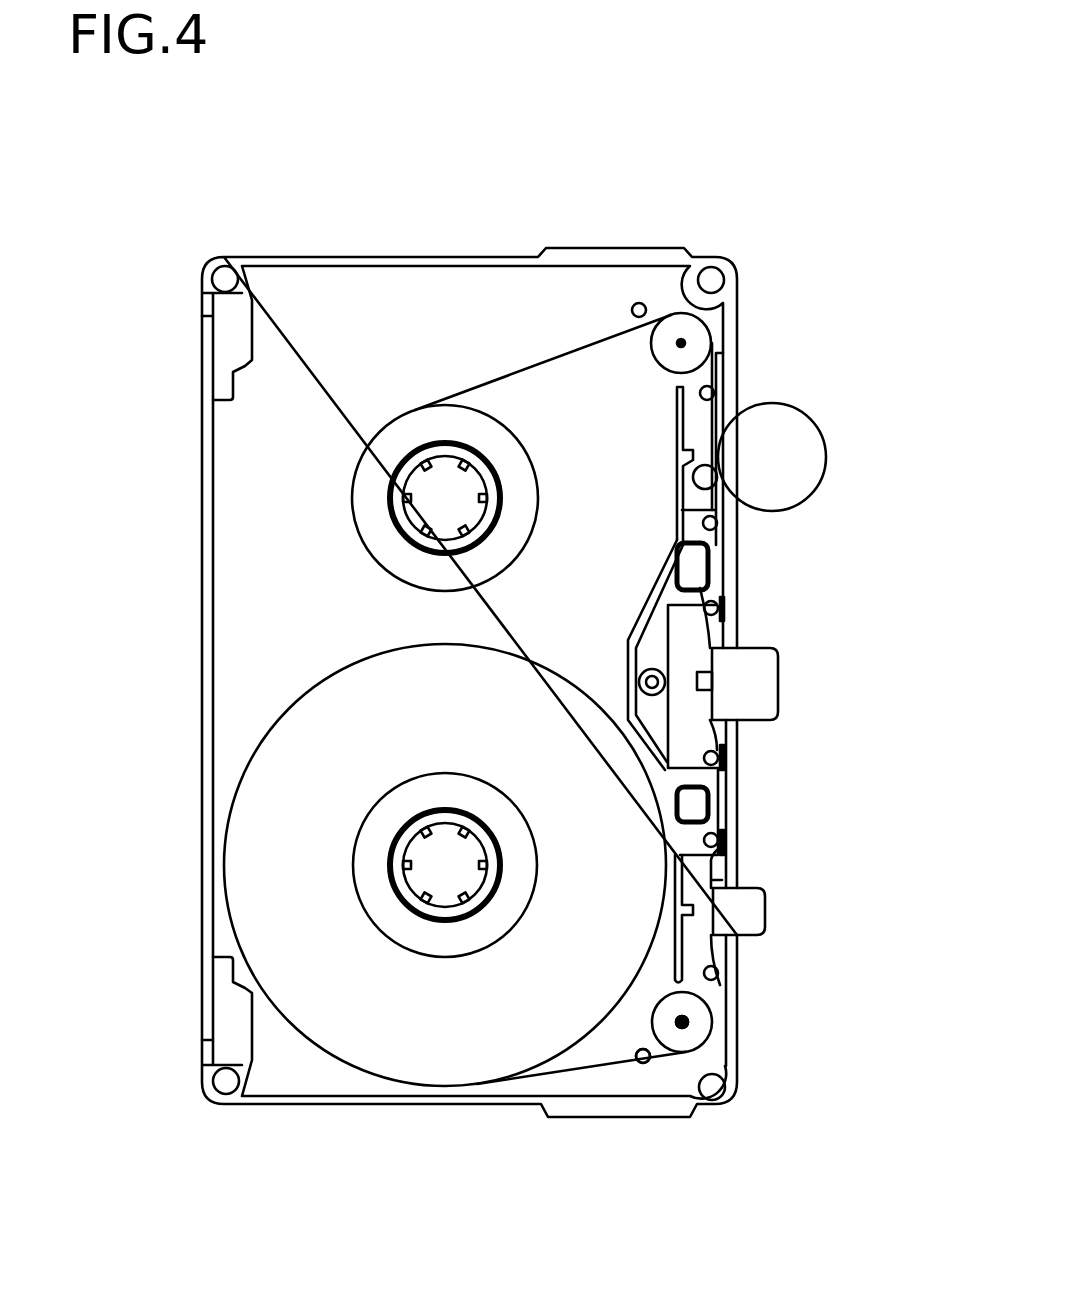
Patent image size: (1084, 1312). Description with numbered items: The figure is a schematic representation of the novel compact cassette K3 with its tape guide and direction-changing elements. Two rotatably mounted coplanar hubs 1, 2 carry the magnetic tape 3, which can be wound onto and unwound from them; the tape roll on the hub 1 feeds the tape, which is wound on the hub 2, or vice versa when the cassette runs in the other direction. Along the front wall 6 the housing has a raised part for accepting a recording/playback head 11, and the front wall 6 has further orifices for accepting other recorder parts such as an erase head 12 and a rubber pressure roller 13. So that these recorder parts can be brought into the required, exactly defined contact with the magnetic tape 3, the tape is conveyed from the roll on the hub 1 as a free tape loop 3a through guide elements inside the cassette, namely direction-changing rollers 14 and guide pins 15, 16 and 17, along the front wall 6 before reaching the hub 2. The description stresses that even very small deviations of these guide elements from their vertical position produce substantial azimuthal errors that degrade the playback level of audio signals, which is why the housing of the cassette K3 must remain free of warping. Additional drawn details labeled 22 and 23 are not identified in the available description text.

The novel cassette K3 is at (503, 257).
The hub 1 is at (400, 925).
The hub 2 is at (375, 458).
The magnetic tape 3 is at (487, 1005).
The free tape loop 3a is at (722, 880).
The front wall 6 is at (718, 608).
The recording/playback head 11 is at (752, 706).
The erase head 12 is at (755, 925).
The rubber pressure roller 13 is at (798, 445).
The direction-changing roller 14 is at (688, 1020).
The guide pin 15 is at (718, 973).
The guide pin 16 is at (718, 840).
The guide pin 17 is at (718, 758).
The pin 22 is at (643, 1063).
The guide roller 23 is at (683, 343).